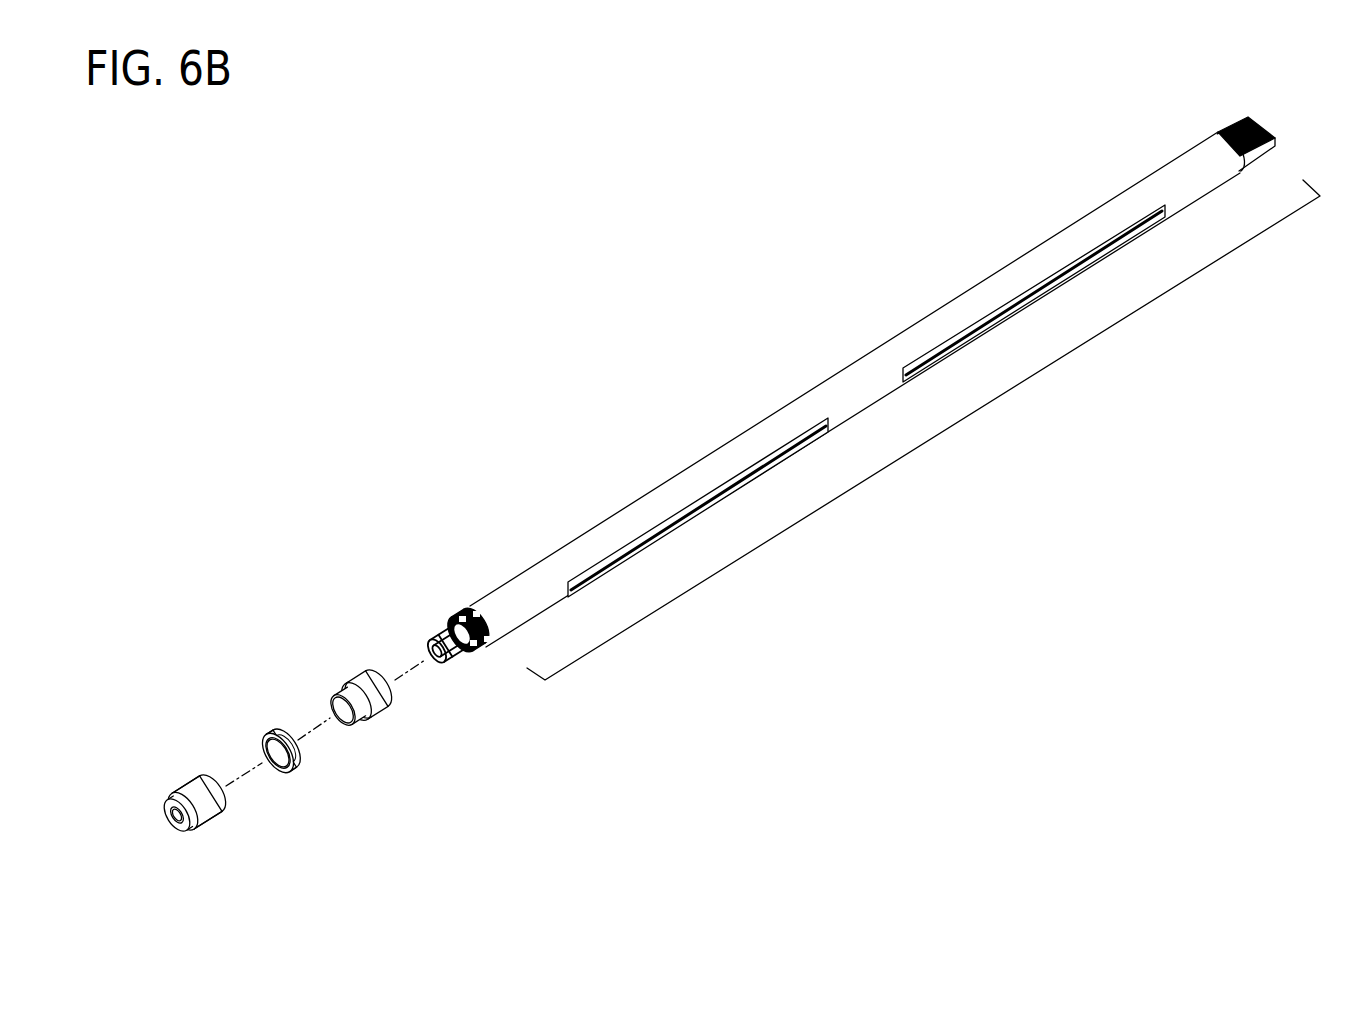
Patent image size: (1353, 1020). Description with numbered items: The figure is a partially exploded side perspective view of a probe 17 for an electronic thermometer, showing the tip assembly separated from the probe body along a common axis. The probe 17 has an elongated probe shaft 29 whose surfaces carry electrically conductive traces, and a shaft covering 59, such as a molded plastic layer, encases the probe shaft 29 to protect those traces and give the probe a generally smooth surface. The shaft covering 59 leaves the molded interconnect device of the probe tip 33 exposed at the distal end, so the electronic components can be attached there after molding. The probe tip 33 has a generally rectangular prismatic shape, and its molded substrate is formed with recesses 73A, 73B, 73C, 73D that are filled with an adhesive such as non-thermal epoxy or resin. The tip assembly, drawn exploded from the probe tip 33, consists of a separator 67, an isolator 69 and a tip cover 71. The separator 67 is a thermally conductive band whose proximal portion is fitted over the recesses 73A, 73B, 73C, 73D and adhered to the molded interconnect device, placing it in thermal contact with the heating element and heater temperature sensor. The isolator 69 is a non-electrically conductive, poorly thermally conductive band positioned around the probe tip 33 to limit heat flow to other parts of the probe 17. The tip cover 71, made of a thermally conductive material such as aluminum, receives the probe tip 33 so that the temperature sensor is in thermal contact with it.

The probe 17 is at (573, 326).
The probe shaft 29 is at (988, 403).
The shaft covering 59 is at (862, 383).
The probe tip 33 is at (425, 648).
The recess 73A is at (462, 613).
The recess 73B is at (479, 612).
The recess 73C is at (477, 648).
The recess 73D is at (490, 647).
The separator 67 is at (354, 688).
The isolator 69 is at (278, 730).
The tip cover 71 is at (190, 785).